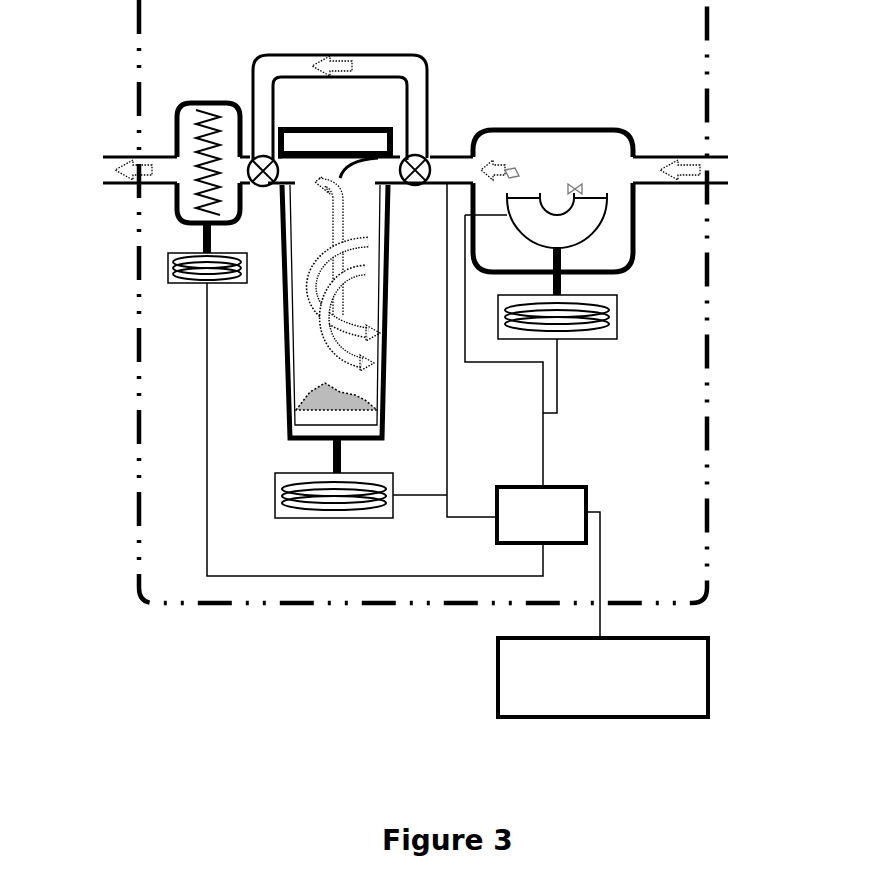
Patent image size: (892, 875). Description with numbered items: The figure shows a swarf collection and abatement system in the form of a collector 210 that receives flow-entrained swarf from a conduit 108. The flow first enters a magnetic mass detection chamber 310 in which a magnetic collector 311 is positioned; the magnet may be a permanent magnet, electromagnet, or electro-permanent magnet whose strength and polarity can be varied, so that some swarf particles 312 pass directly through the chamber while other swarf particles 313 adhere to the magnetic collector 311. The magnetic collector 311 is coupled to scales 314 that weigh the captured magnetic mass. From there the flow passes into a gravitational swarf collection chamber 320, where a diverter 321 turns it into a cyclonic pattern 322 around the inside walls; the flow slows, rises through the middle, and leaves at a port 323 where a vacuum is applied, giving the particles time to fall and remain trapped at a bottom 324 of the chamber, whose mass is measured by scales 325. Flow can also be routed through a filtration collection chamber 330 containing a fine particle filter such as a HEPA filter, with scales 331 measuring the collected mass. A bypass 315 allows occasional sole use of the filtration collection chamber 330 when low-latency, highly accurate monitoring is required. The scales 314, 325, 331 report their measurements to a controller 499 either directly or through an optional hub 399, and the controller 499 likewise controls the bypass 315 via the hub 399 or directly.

The collector 210 is at (707, 13).
The conduit 108 is at (720, 156).
The port 323 is at (123, 158).
The filtration collection chamber 330 is at (207, 103).
The scales 331 is at (195, 284).
The bypass 315 is at (418, 155).
The swarf particles 313 is at (517, 170).
The swarf particles 312 is at (580, 183).
The magnetic collector 311 is at (607, 205).
The magnetic mass detection chamber 310 is at (630, 260).
The scales 314 is at (600, 340).
The diverter 321 is at (355, 168).
The gravitational swarf collection chamber 320 is at (390, 297).
The cyclonic pattern 322 is at (327, 360).
The bottom 324 is at (357, 398).
The scales 325 is at (295, 473).
The hub 399 is at (548, 562).
The controller 499 is at (603, 677).